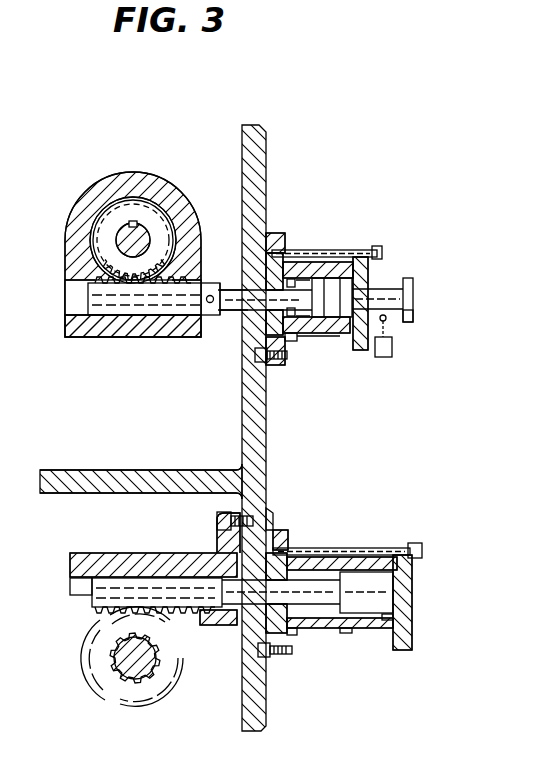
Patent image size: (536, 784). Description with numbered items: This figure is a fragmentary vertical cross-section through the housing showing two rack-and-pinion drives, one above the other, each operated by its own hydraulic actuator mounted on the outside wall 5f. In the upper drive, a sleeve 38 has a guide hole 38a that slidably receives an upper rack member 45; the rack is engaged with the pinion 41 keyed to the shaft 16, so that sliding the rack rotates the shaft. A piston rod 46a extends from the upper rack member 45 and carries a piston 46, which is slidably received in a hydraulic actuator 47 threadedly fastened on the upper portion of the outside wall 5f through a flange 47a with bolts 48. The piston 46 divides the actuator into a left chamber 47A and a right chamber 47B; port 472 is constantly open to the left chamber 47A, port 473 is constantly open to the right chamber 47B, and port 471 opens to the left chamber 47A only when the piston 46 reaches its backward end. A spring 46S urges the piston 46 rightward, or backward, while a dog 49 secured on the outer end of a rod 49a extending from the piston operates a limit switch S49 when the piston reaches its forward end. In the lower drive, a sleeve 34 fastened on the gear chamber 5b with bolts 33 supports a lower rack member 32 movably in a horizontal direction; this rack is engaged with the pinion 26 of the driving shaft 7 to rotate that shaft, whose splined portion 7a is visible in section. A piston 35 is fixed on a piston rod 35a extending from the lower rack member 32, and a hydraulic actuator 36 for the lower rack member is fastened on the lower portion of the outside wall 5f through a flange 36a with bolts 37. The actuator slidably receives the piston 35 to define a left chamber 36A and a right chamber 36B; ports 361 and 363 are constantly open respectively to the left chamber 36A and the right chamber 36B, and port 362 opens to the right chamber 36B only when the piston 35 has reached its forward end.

The outside wall 5f is at (258, 165).
The gear chamber 5b is at (132, 482).
The sleeve 38 is at (108, 190).
The guide hole 38a is at (160, 333).
The pinion 41 is at (107, 233).
The shaft 16 is at (142, 236).
The upper rack member 45 is at (118, 305).
The piston 46 is at (365, 253).
The piston rod 46a is at (242, 292).
The spring 46S is at (296, 280).
The hydraulic actuator 47 is at (353, 297).
The flange 47a is at (280, 236).
The left chamber 47A is at (318, 266).
The right chamber 47B is at (370, 272).
The port 471 is at (330, 253).
The port 472 is at (292, 334).
The port 473 is at (328, 333).
The bolts 48 is at (278, 366).
The dog 49 is at (413, 290).
The rod 49a is at (411, 318).
The limit switch S49 is at (392, 352).
The bolts 33 is at (217, 521).
The sleeve 34 is at (104, 562).
The lower rack member 32 is at (100, 598).
The pinion 26 is at (100, 618).
The driving shaft 7 is at (148, 672).
The spline 7a is at (122, 672).
The piston 35 is at (390, 588).
The piston rod 35a is at (330, 590).
The hydraulic actuator 36 is at (363, 595).
The flange 36a is at (282, 532).
The left chamber 36A is at (326, 628).
The right chamber 36B is at (405, 618).
The port 361 is at (294, 636).
The port 362 is at (346, 634).
The port 363 is at (388, 622).
The bolts 37 is at (280, 660).